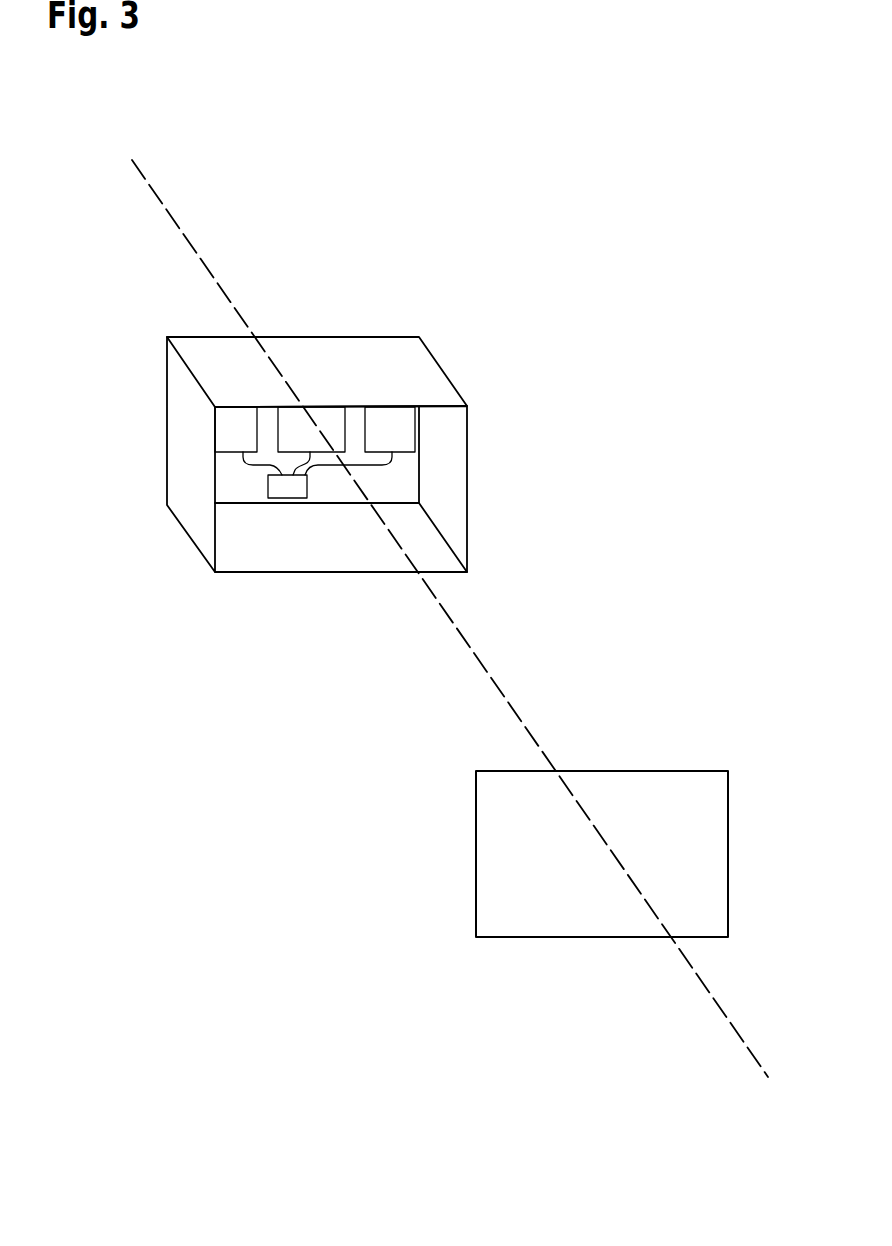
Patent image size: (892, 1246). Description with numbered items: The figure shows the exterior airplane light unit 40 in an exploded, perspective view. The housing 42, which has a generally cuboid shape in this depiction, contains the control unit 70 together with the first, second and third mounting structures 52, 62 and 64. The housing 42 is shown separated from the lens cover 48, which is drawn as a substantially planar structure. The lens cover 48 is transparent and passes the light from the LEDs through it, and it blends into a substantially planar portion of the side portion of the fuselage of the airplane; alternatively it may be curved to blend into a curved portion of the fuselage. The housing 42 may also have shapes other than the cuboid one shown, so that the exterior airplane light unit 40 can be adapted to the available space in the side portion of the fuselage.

The exterior airplane light unit 40 is at (673, 552).
The housing 42 is at (443, 370).
The lens cover 48 is at (476, 852).
The first mounting structure 52 is at (415, 430).
The second mounting structure 62 is at (328, 452).
The third mounting structure 64 is at (227, 453).
The control unit 70 is at (287, 498).